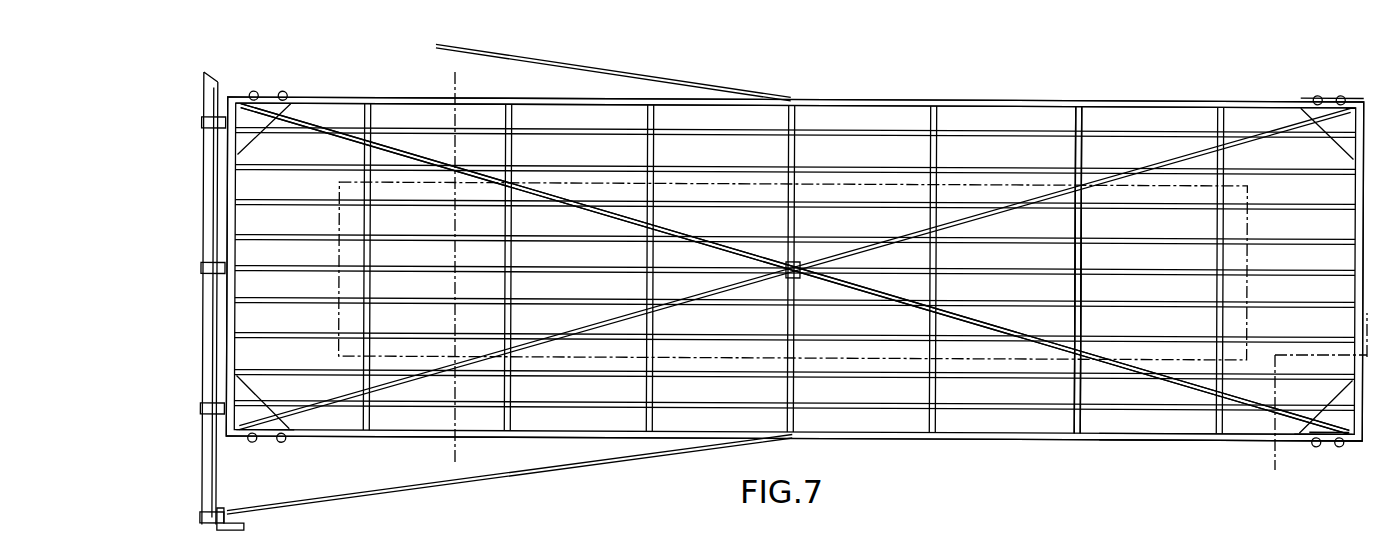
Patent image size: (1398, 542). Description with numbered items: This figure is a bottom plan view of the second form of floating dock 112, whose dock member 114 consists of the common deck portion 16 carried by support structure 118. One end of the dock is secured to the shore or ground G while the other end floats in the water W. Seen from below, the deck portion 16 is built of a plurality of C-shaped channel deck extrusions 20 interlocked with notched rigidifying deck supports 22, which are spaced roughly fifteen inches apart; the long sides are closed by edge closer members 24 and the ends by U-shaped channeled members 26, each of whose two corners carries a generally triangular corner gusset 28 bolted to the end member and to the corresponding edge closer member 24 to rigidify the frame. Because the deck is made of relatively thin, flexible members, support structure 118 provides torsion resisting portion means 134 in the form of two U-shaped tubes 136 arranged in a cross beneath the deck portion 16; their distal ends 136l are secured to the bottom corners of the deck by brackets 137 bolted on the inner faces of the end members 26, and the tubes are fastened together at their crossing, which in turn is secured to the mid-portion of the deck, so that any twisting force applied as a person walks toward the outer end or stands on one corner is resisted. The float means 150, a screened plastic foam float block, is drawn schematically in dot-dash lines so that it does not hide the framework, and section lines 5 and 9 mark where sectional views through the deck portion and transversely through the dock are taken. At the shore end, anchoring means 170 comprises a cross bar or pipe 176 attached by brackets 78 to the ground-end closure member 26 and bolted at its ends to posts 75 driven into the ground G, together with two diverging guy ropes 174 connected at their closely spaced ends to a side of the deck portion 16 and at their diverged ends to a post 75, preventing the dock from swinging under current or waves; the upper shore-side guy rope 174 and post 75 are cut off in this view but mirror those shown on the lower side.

The edge closer member 24 is at (1016, 104).
The deck support 22 is at (1065, 160).
The dock 112 is at (946, 440).
The deck portion 16 is at (1057, 440).
The dock member 114 is at (1077, 270).
The deck extrusion 20 is at (1168, 430).
The support structure 118 is at (960, 318).
The torsion resisting portion means 134 is at (794, 269).
The U-shaped tube 136 is at (625, 318).
The brace lower end 136l is at (1346, 432).
The bracket 137 is at (1352, 106).
The corner gusset 28 is at (245, 137).
The U-shaped channeled member 26 is at (236, 438).
The float means 150 is at (334, 189).
The guy rope 174 is at (748, 97).
The cross bar or pipe 176 is at (212, 207).
The bracket 78 is at (203, 410).
The anchoring means 170 is at (208, 520).
The post 75 is at (248, 527).
The ground G is at (175, 322).
The water W is at (981, 90).
The section line 9— 9 is at (478, 458).
The section line 5— 5 is at (1275, 468).